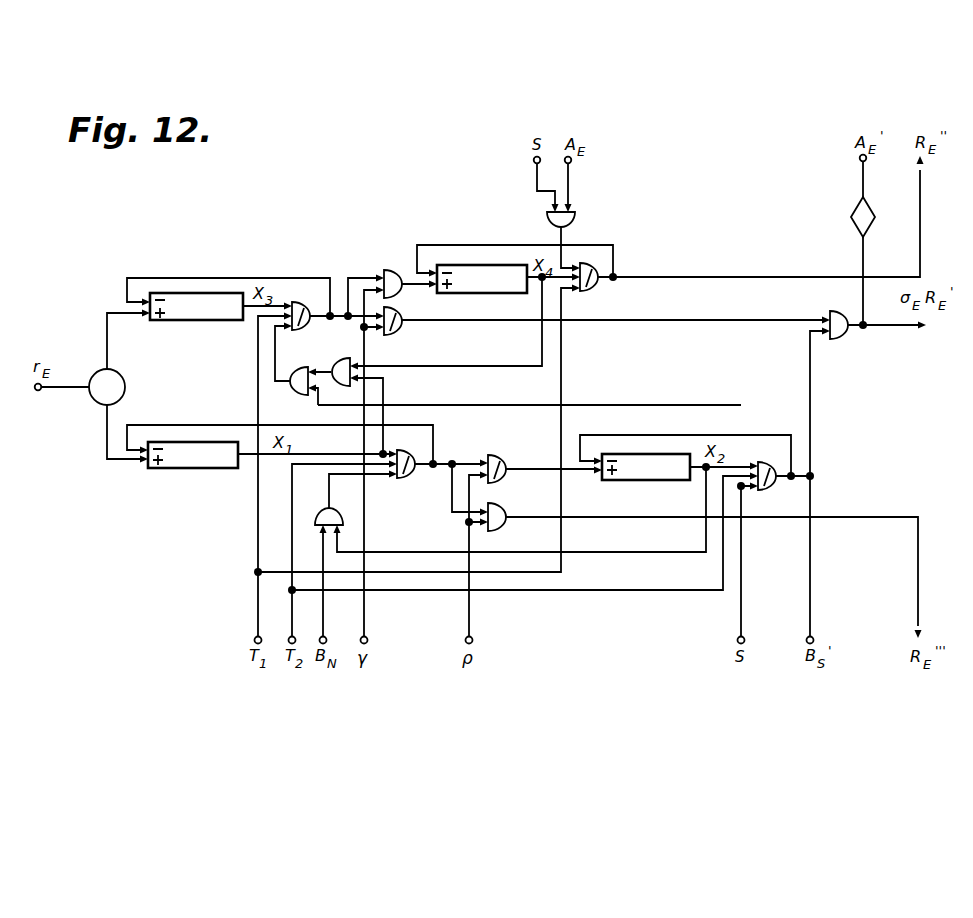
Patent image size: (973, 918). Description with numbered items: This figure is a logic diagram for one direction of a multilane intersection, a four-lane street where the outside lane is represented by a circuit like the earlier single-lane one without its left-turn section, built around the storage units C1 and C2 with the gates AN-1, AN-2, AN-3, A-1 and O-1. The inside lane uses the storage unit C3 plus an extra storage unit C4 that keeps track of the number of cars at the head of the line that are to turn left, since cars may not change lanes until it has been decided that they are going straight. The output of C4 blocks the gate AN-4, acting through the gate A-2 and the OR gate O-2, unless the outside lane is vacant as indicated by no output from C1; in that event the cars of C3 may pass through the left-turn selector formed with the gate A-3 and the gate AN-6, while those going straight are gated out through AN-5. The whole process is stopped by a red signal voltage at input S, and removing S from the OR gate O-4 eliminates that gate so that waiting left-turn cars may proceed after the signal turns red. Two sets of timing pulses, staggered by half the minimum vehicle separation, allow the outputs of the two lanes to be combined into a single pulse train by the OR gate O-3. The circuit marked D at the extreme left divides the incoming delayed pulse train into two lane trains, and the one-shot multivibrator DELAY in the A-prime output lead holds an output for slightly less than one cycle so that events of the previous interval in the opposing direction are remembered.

The pulse dividing circuit D is at (107, 387).
The storage unit C1 is at (193, 456).
The storage unit C2 is at (646, 468).
The storage unit C3 is at (196, 307).
The extra storage unit C4 is at (482, 279).
The AND gate AN-1 is at (420, 474).
The AND gate AN-2 is at (512, 476).
The AND gate AN-3 is at (774, 486).
The AND gate AN-4 is at (314, 326).
The AND gate AN-5 is at (413, 326).
The AND gate AN-6 is at (607, 283).
The gate A-1 is at (509, 524).
The gate A-2 is at (339, 383).
The gate A-3 is at (404, 289).
The OR gate O-1 is at (337, 508).
The OR gate O-2 is at (287, 384).
The OR gate O-3 is at (852, 336).
The OR gate O-4 is at (580, 222).
The one-shot multivibrator DELAY is at (827, 217).